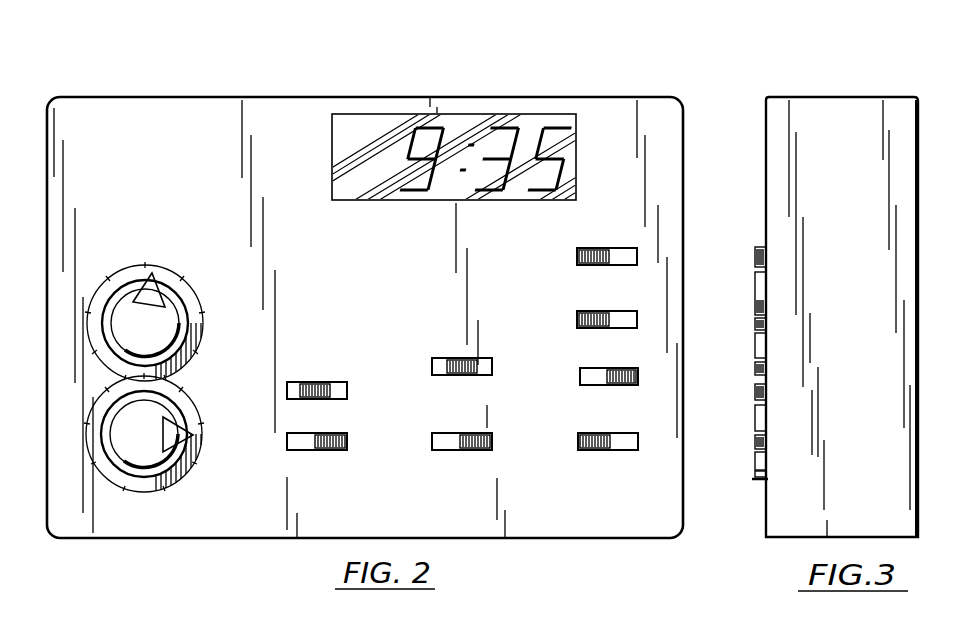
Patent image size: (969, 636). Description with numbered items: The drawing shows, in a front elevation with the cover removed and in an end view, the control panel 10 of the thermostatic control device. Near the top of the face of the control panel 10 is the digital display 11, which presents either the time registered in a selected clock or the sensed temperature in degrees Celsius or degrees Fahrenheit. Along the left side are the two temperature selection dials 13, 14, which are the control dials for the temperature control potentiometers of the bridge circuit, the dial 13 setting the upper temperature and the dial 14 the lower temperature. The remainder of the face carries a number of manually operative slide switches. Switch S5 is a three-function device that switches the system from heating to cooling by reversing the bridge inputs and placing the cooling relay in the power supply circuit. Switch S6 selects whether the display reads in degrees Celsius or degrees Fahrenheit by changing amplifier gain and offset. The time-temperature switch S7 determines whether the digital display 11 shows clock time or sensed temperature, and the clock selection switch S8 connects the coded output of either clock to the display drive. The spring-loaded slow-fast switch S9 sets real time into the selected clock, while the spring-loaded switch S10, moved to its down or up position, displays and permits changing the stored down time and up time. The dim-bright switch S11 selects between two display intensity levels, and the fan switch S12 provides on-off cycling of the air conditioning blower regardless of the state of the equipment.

The control panel 10 is at (577, 83).
The digital display 11 is at (384, 128).
The temperature selection dial 13 is at (182, 292).
The temperature selection dial 14 is at (187, 416).
The heating-cooling switch S5 is at (345, 433).
The Celsius-Fahrenheit switch S6 is at (598, 377).
The time-temperature switch S7 is at (578, 319).
The clock selection switch S8 is at (464, 451).
The slow-fast time setting switch S9 is at (330, 400).
The down-up switch S10 is at (456, 358).
The dim-bright switch S11 is at (587, 248).
The fan switch S12 is at (590, 450).